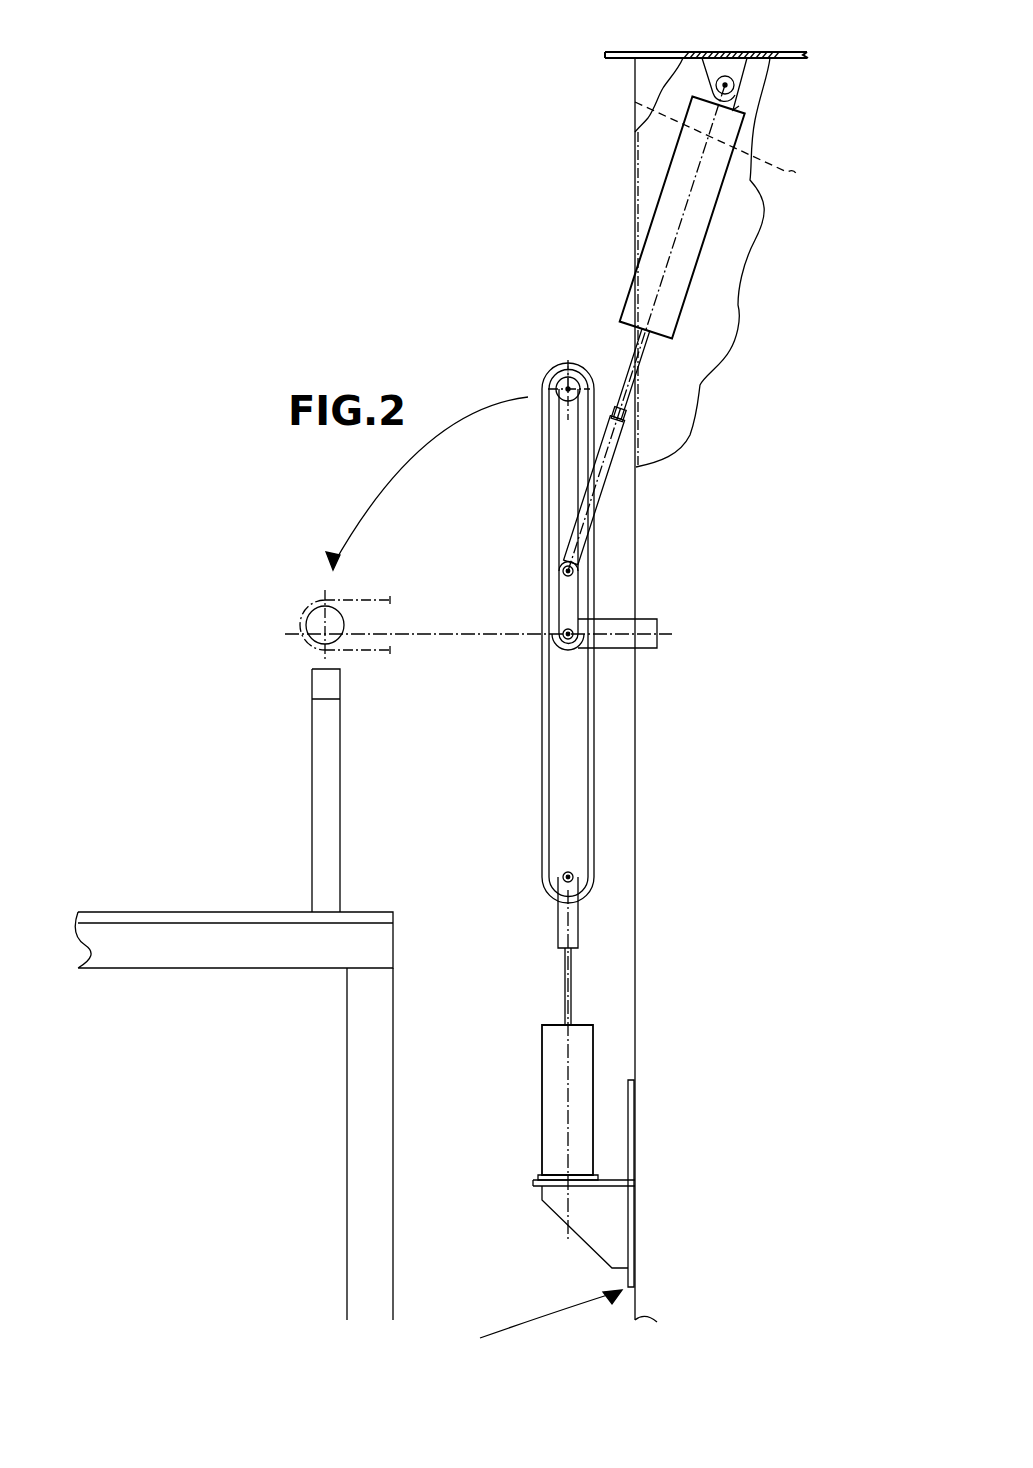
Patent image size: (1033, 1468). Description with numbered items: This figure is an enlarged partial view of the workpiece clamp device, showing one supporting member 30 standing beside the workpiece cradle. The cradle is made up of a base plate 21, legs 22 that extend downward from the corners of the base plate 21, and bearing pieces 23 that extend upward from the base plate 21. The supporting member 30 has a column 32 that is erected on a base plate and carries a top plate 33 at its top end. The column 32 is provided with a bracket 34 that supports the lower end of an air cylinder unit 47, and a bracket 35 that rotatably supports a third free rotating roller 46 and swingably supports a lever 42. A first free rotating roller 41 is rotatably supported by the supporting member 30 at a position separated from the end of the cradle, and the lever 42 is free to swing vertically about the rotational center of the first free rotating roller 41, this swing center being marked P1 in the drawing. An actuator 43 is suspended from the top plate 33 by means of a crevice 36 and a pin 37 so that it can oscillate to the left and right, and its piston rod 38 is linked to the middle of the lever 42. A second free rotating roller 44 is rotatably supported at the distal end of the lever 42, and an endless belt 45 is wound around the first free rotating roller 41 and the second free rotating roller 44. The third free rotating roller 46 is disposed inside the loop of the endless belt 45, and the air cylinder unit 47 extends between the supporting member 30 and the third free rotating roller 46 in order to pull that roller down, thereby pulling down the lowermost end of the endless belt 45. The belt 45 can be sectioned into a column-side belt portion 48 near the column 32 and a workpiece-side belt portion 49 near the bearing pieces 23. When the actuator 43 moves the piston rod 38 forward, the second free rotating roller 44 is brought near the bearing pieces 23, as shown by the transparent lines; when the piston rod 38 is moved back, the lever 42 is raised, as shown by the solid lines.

The base plate 21 is at (190, 915).
The legs 22 is at (378, 1215).
The bearing pieces 23 is at (318, 787).
The supporting members 30 is at (532, 1323).
The columns 32 is at (636, 958).
The top plates 33 is at (652, 55).
The brackets 34 is at (615, 1180).
The brackets 35 is at (615, 620).
The crevices 36 is at (747, 72).
The pins 37 is at (735, 92).
The piston rods 38 is at (705, 380).
The first free rotating rollers 41 is at (550, 655).
The levers 42 is at (560, 480).
The actuators 43 is at (667, 200).
The second free rotating rollers 44 is at (556, 363).
The endless belts 45 is at (547, 384).
The third free rotating rollers 46 is at (590, 867).
The air cylinder units 47 is at (553, 1095).
The column-side belt portions 48 is at (597, 572).
The workpiece-side belt portions 49 is at (545, 543).
The pivot point P1 is at (578, 644).